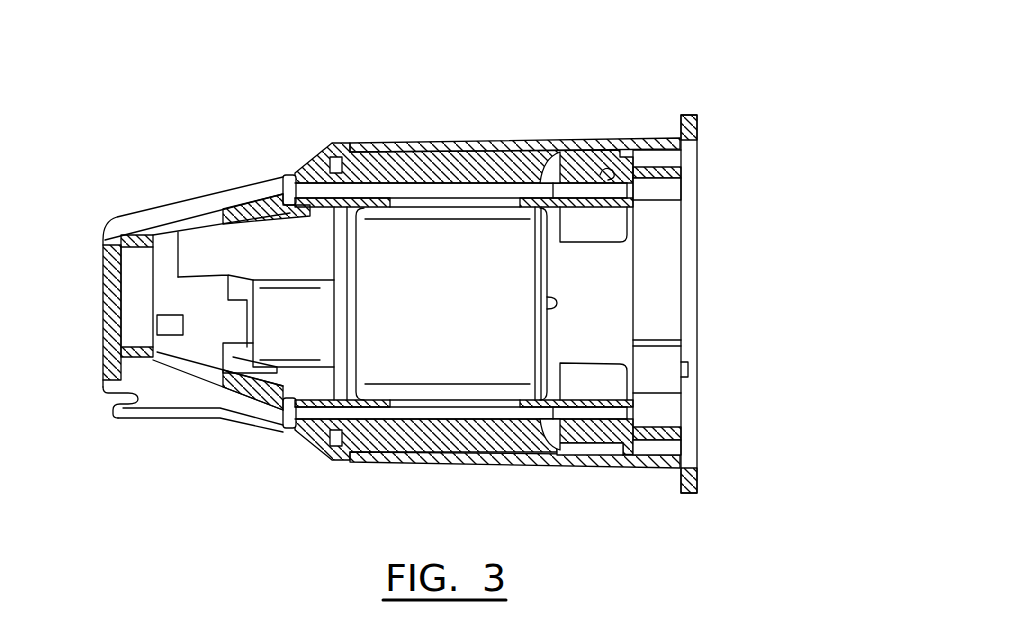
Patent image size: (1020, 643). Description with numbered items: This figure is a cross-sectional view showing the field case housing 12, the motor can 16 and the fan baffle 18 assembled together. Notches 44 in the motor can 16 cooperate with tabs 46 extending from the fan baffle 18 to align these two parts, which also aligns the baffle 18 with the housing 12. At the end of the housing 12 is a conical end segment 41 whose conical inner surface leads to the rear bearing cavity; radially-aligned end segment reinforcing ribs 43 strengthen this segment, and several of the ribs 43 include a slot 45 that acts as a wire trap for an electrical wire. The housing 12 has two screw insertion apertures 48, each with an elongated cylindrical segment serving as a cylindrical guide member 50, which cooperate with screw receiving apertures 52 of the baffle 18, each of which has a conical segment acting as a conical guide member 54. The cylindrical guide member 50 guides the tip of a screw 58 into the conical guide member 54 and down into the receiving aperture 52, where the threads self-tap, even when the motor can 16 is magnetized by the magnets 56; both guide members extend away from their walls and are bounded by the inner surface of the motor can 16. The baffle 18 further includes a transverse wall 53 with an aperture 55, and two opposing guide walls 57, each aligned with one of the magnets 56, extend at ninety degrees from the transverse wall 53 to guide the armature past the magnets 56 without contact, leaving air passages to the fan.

The field case housing 12 is at (463, 141).
The motor can 16 is at (465, 433).
The fan baffle 18 is at (610, 173).
The conical end segment 41 is at (108, 425).
The end segment reinforcing ribs 43 is at (209, 194).
The notches 44 is at (542, 166).
The slot 45 is at (120, 400).
The tabs 46 is at (560, 165).
The screw insertion apertures 48 is at (293, 173).
The cylindrical guide member 50 is at (380, 199).
The screw receiving apertures 52 is at (542, 210).
The transverse wall 53 is at (681, 199).
The conical guide member 54 is at (535, 203).
The aperture 55 is at (665, 292).
The magnets 56 is at (408, 352).
The guide walls 57 is at (607, 353).
The screw 58 is at (400, 197).